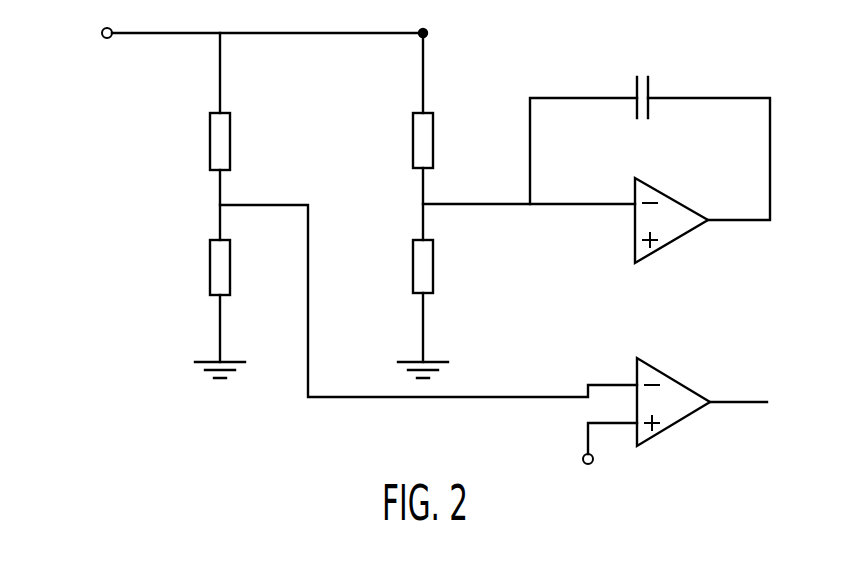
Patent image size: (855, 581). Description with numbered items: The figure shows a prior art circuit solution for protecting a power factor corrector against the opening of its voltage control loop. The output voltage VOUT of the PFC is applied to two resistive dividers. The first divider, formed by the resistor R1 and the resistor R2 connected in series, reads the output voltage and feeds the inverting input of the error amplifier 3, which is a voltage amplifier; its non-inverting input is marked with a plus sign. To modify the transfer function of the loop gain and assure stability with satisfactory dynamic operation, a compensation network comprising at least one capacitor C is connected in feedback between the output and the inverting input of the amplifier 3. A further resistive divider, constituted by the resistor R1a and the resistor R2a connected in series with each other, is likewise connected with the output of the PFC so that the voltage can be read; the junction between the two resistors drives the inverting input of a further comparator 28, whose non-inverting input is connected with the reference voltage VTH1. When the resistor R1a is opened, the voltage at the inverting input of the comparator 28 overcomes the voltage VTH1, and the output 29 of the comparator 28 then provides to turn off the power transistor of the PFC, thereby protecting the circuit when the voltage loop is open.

The amplifier 3 is at (673, 207).
The comparator 28 is at (672, 392).
The output 29 is at (738, 400).
The capacitor C is at (635, 85).
The resistor R1 is at (443, 136).
The resistor R2 is at (436, 309).
The resistor R1a is at (194, 136).
The resistor R2a is at (201, 309).
The output voltage VOUT is at (242, 21).
The reference voltage VTH1 is at (586, 449).